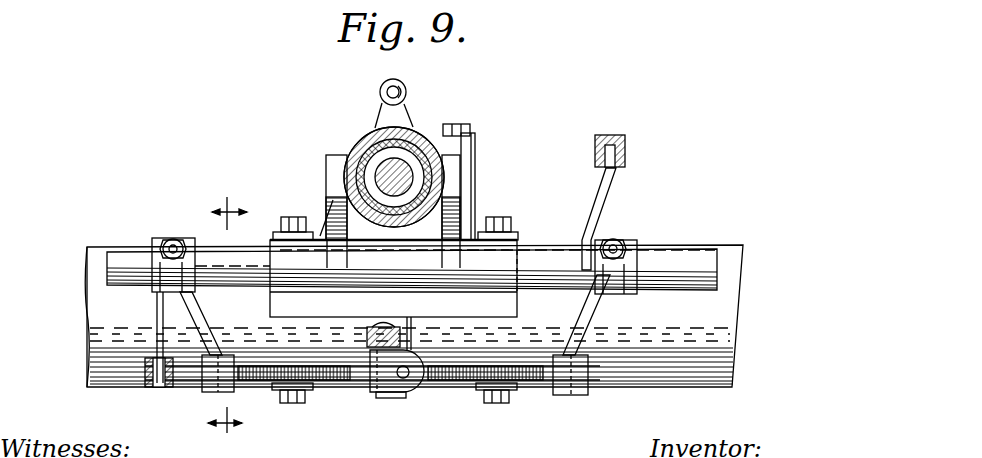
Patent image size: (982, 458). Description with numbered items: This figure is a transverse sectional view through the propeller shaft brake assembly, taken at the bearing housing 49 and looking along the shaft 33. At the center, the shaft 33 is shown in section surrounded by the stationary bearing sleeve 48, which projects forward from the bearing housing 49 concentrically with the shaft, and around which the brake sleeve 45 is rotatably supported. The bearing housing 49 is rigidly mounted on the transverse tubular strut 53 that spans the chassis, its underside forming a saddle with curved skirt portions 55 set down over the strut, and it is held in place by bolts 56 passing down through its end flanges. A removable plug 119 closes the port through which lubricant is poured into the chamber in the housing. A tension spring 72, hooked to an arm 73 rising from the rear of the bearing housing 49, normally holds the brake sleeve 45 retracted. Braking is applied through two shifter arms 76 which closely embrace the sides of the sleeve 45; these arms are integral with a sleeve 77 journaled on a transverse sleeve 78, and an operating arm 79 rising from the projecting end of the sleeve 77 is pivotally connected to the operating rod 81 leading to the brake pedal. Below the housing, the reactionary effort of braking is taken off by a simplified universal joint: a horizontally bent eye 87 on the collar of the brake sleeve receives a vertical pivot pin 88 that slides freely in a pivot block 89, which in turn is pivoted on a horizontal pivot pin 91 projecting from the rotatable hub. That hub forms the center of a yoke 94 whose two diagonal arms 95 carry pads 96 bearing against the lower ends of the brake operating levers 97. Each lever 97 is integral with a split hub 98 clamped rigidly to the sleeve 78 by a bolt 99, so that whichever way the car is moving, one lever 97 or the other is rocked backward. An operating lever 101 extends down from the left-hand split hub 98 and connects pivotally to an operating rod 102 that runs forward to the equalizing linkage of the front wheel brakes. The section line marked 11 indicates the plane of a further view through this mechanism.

The section line 11 is at (227, 315).
The shaft 33 is at (380, 176).
The brake sleeve 45 is at (366, 135).
The bearing sleeve 48 is at (360, 150).
The bearing housing 49 is at (330, 205).
The tubular strut 53 is at (688, 364).
The curved skirt portions 55 is at (490, 312).
The bolts 56 is at (493, 216).
The tension spring 72 is at (402, 85).
The arm 73 is at (406, 116).
The shifter arms 76 is at (333, 160).
The sleeve 77 is at (525, 250).
The sleeve 78 is at (245, 280).
The operating arm 79 is at (600, 208).
The operating rod 81 is at (626, 158).
The eye 87 is at (367, 335).
The pivot pin 88 is at (411, 345).
The pivot block 89 is at (372, 360).
The pivot pin 91 is at (402, 380).
The yoke 94 is at (448, 384).
The arms 95 is at (268, 368).
The pads 96 is at (200, 387).
The brake operating levers 97 is at (205, 328).
The split hub 98 is at (160, 290).
The bolt 99 is at (173, 239).
The operating lever 101 is at (92, 327).
The operating rod 102 is at (410, 353).
The removable plug 119 is at (470, 128).